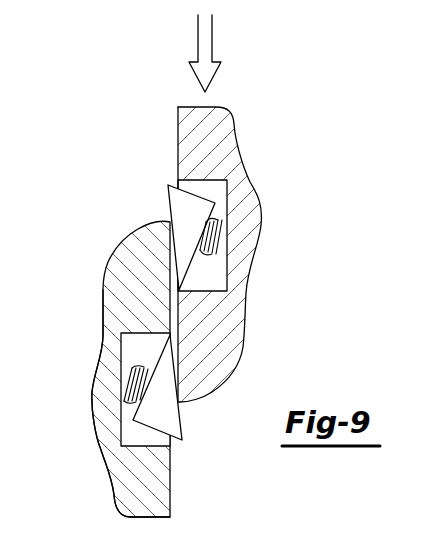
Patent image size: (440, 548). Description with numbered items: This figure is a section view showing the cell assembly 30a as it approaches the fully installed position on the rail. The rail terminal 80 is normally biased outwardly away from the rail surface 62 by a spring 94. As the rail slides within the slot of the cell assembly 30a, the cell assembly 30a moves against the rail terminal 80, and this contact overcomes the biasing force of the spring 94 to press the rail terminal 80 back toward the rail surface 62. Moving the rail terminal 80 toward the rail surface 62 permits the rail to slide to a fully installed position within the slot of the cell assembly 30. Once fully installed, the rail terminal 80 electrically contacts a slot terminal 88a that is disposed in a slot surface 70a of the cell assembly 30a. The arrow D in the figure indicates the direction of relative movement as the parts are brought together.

The cell assembly 30 is at (235, 152).
The cell assembly 30a is at (113, 473).
The rail surface 62 is at (178, 141).
The slot surface 70a is at (170, 483).
The rail terminal 80 is at (168, 200).
The slot terminal 88a is at (182, 418).
The spring 94 is at (214, 262).
The direction of force D is at (213, 40).